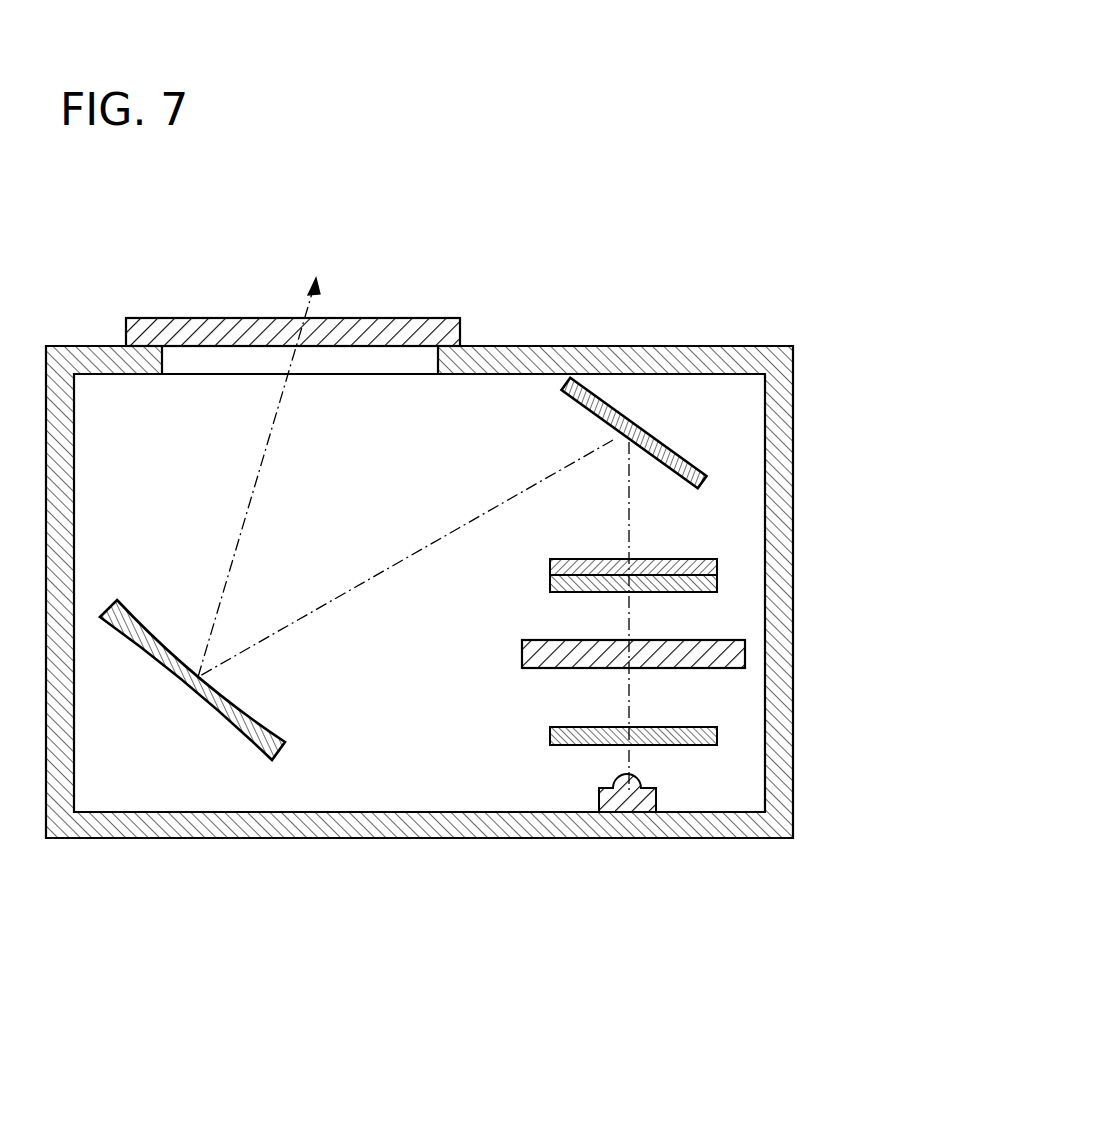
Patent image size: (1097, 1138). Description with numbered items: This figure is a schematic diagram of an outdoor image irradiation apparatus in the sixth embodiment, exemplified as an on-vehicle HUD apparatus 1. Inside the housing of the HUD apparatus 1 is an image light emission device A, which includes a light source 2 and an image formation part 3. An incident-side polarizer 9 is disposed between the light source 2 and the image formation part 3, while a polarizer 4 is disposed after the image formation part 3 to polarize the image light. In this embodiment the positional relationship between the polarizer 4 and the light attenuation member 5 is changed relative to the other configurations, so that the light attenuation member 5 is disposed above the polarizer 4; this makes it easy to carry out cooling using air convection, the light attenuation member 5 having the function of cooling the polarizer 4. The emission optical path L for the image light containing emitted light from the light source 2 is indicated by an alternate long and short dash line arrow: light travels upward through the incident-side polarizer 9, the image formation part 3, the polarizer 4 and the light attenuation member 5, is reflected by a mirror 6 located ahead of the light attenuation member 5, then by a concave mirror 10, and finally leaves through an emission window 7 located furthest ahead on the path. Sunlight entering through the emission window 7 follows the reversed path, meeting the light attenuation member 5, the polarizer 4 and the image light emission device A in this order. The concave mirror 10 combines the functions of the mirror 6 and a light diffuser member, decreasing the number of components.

The HUD apparatus 1 is at (636, 311).
The light source 2 is at (656, 800).
The image formation part 3 is at (745, 664).
The polarizer 4 is at (717, 588).
The light attenuation member 5 is at (717, 566).
The mirror 6 is at (662, 438).
The emission window 7 is at (352, 318).
The incident-side polarizer 9 is at (585, 746).
The concave mirror 10 is at (180, 670).
The emission optical path L is at (353, 590).
The image light emission device A is at (925, 742).